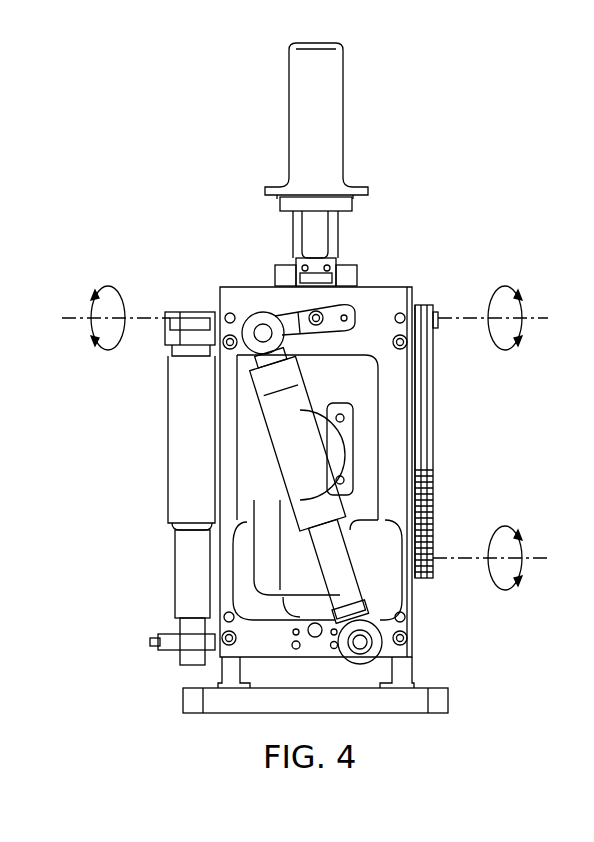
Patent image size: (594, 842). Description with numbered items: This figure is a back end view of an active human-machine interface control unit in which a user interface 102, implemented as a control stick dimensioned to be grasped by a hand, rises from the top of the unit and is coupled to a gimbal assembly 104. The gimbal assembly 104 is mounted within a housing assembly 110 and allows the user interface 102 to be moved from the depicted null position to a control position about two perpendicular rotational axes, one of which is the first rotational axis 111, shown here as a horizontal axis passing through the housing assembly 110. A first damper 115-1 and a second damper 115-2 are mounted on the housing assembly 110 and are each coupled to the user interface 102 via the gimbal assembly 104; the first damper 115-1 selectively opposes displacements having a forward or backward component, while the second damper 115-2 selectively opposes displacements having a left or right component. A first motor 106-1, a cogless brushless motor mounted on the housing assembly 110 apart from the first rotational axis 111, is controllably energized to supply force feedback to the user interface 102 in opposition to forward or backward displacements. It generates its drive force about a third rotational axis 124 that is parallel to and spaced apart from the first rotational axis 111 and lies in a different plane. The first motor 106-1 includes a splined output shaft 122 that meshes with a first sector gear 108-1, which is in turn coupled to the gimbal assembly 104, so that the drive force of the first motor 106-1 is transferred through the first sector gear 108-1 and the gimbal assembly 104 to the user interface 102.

The user interface 102 is at (343, 125).
The gimbal assembly 104 is at (343, 262).
The housing assembly 110 is at (240, 293).
The first rotational axis 111 is at (72, 318).
The first damper 115-1 is at (168, 433).
The second damper 115-2 is at (317, 453).
The first sector gear 108-1 is at (436, 406).
The splined output shaft 122 is at (424, 578).
The third rotational axis 124 is at (532, 558).
The first motor 106-1 is at (371, 605).